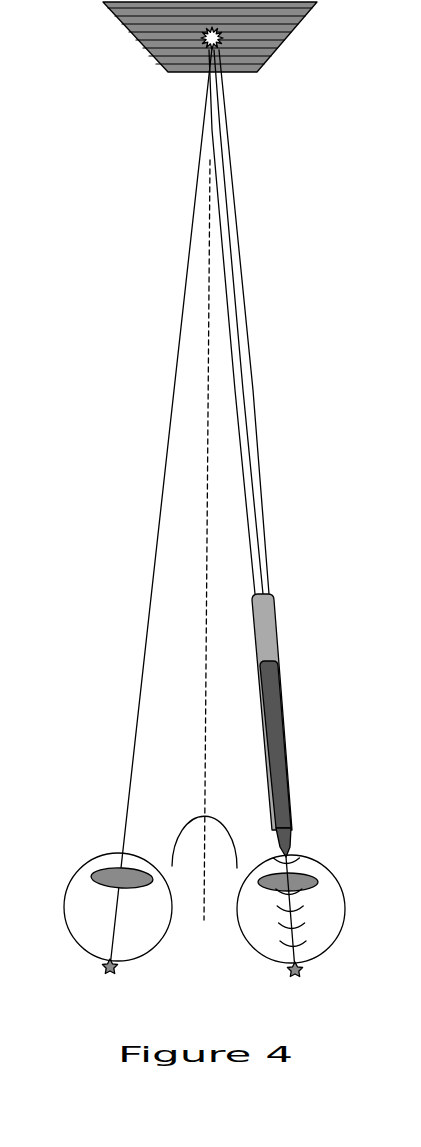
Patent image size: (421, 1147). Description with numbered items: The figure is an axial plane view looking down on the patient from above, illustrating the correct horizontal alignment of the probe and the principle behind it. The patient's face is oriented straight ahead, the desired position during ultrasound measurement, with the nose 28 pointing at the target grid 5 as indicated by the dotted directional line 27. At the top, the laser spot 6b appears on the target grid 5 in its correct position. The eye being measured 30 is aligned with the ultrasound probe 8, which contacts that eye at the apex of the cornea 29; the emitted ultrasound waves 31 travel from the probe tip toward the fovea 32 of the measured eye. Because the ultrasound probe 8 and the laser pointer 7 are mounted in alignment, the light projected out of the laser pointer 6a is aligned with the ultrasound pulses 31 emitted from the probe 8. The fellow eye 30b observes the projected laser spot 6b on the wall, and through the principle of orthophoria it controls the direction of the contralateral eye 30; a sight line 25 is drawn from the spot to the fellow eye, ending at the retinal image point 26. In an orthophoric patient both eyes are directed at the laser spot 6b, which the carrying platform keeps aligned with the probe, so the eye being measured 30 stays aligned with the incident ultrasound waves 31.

The target grid 5 is at (282, 27).
The light projected out of the laser pointer 6a is at (255, 422).
The laser spot 6b is at (223, 50).
The laser pointer 7 is at (267, 618).
The ultrasound probe 8 is at (278, 727).
The ray to left eye 25 is at (160, 500).
The image point on left retina 26 is at (100, 972).
The dotted directional line 27 is at (203, 772).
The nose 28 is at (220, 823).
The apex of the cornea 29 is at (292, 852).
The eye being measured 30 is at (342, 892).
The fellow eye 30b is at (68, 882).
The emitted ultrasound waves 31 is at (305, 930).
The fovea 32 is at (305, 973).